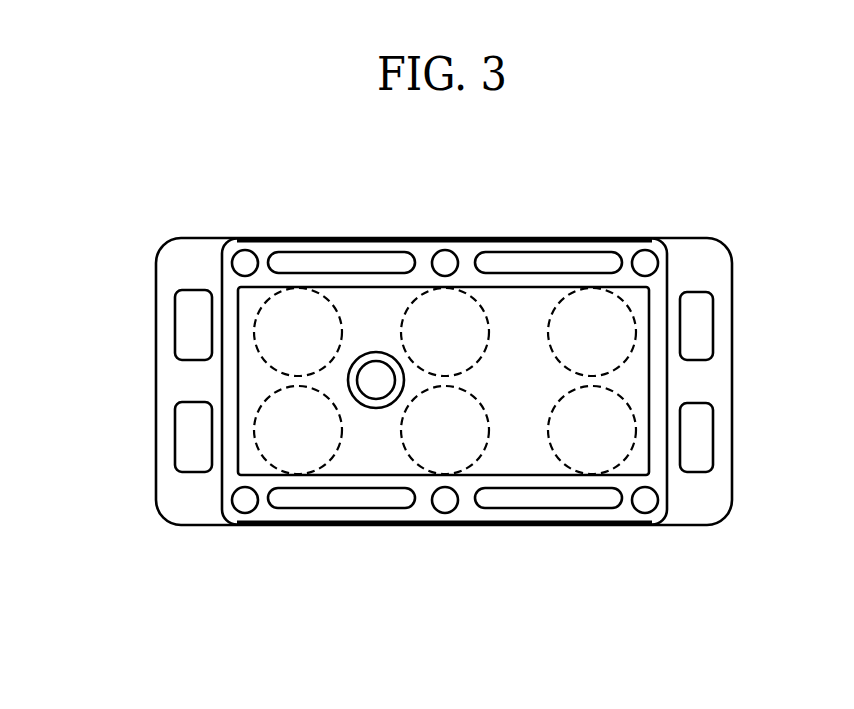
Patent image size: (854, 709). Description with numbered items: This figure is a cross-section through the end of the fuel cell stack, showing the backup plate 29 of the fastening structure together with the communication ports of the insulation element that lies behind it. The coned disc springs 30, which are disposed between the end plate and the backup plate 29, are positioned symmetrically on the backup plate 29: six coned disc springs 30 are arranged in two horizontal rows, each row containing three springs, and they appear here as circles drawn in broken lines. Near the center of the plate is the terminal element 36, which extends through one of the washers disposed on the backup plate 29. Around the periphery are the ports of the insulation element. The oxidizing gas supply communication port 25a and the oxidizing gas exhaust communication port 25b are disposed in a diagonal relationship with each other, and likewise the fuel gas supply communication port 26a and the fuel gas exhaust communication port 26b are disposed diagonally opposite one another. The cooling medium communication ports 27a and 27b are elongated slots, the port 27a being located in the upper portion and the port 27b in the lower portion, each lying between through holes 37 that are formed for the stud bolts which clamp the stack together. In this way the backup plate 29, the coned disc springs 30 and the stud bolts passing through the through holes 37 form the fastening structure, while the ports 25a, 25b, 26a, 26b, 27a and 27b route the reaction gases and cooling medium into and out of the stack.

The backup plate 29 is at (615, 240).
The through holes 37 is at (245, 258).
The cooling medium communication port 27a is at (333, 262).
The cooling medium communication port 27b is at (333, 503).
The oxidizing gas supply communication port 25a is at (190, 434).
The oxidizing gas exhaust communication port 25b is at (695, 302).
The fuel gas supply communication port 26a is at (695, 463).
The fuel gas exhaust communication port 26b is at (190, 332).
The coned disc springs 30 is at (545, 343).
The terminal element 36 is at (373, 408).